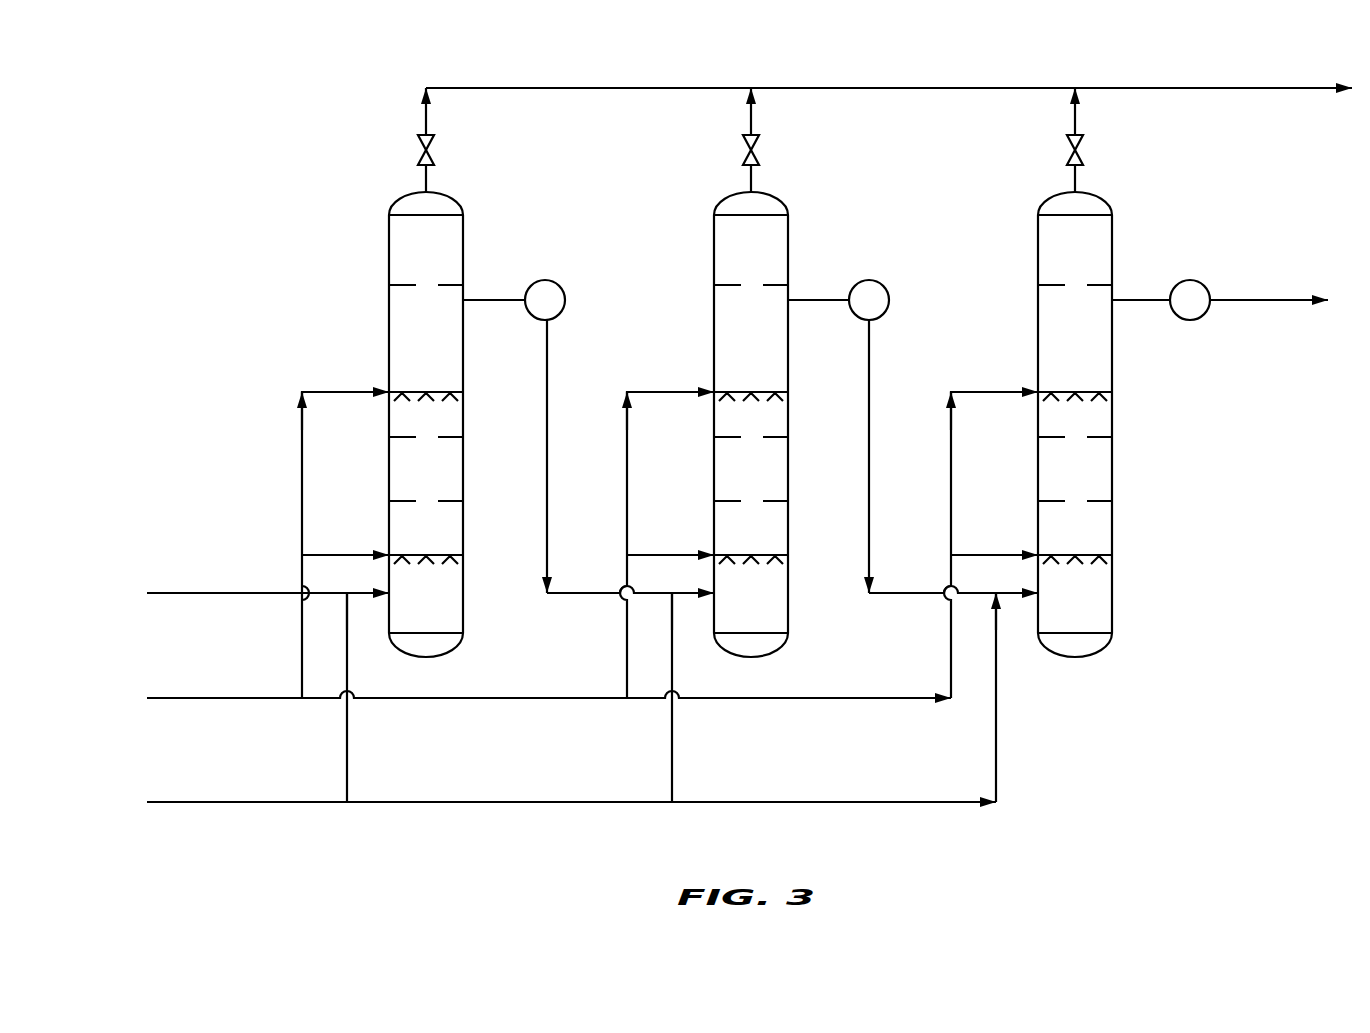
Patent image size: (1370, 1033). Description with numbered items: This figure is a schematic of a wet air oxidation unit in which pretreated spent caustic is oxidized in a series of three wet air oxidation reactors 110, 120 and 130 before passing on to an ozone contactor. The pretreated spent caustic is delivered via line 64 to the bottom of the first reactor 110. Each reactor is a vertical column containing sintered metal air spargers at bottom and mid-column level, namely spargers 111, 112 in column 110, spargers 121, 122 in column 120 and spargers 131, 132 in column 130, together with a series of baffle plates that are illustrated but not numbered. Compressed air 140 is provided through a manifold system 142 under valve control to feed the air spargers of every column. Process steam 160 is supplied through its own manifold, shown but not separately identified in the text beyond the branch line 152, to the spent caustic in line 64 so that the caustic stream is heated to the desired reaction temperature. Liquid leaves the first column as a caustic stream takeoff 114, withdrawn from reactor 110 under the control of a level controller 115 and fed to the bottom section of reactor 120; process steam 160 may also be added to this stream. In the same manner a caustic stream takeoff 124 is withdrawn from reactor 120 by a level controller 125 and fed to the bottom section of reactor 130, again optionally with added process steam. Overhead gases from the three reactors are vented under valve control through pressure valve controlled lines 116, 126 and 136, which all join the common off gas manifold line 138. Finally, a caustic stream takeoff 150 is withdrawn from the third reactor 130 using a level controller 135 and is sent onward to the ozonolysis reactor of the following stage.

The line 64 is at (183, 592).
The wet air oxidation reactor 110 is at (378, 226).
The sintered metal air sparger 111 is at (389, 388).
The sintered metal air sparger 112 is at (389, 552).
The caustic stream takeoff 114 is at (548, 378).
The level controller 115 is at (555, 283).
The pressure valve controlled line 116 is at (440, 146).
The wet air oxidation reactor 120 is at (703, 226).
The sintered metal air sparger 121 is at (714, 388).
The sintered metal air sparger 122 is at (714, 552).
The caustic stream takeoff 124 is at (871, 378).
The level controller 125 is at (879, 283).
The pressure valve controlled line 126 is at (766, 146).
The wet air oxidation reactor 130 is at (1027, 226).
The sintered metal air sparger 131 is at (1038, 388).
The sintered metal air sparger 132 is at (1038, 552).
The level controller 135 is at (1200, 283).
The pressure valve controlled line 136 is at (1088, 146).
The off gas manifold line 138 is at (1216, 87).
The compressed air 140 is at (183, 697).
The manifold system 142 is at (490, 700).
The caustic stream takeoff 150 is at (1265, 301).
The liquid feed distribution line 152 is at (490, 804).
The process steam 160 is at (183, 801).